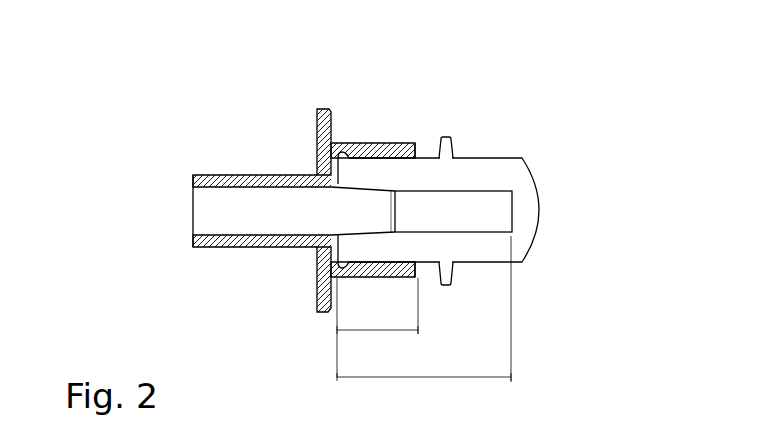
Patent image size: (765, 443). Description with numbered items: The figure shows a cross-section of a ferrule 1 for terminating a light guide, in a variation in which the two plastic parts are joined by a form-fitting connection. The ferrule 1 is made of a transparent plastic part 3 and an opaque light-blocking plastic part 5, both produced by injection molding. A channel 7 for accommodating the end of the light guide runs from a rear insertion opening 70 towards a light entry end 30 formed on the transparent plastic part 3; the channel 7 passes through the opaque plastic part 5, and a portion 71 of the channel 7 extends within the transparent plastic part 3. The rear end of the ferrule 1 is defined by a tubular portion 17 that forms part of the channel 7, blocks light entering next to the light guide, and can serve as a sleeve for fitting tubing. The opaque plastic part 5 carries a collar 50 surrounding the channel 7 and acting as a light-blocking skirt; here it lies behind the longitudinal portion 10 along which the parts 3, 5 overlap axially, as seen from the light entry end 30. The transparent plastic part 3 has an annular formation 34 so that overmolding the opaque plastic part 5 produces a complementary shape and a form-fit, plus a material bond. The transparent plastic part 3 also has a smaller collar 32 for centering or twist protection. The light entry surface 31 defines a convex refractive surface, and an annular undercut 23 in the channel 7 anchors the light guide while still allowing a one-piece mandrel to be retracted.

The ferrule 1 is at (145, 114).
The tubular portion 17 is at (250, 175).
The rear insertion opening 70 is at (190, 205).
The channel 7 is at (228, 218).
The collar 50 is at (325, 108).
The annular formation 34 is at (355, 143).
The opaque light-blocking plastic part 5 is at (395, 143).
The light entry end 30 is at (570, 229).
The transparent plastic part 3 is at (480, 160).
The light entry surface 31 is at (540, 197).
The collar 32 is at (452, 137).
The annular undercut 23 is at (425, 233).
The longitudinal portion 10 is at (377, 328).
The portion of channel 71 is at (424, 324).